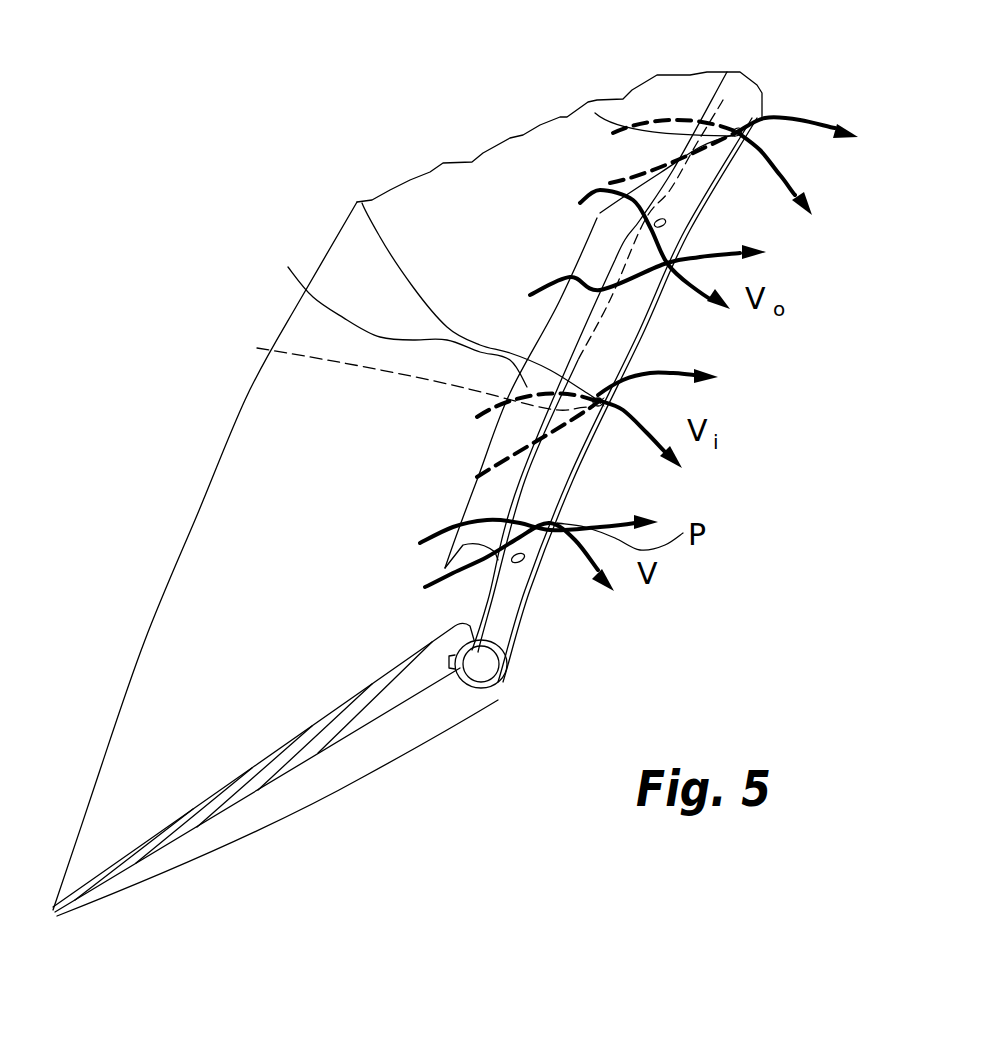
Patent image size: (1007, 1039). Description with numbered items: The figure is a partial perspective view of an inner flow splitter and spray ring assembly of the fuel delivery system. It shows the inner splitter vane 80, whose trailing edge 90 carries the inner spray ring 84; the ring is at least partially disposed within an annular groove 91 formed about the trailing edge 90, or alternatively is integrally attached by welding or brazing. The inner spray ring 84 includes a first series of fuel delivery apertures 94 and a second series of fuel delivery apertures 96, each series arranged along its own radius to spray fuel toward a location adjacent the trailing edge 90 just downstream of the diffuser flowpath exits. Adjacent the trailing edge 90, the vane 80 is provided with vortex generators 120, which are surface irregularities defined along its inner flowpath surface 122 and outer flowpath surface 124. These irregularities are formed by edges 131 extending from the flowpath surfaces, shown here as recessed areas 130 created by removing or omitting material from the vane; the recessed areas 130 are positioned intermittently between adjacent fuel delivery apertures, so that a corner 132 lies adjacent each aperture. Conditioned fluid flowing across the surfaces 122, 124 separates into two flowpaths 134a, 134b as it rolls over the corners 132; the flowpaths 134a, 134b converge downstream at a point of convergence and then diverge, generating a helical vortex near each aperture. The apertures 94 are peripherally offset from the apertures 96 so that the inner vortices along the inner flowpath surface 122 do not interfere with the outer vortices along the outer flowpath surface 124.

The inner splitter vane 80 is at (210, 876).
The inner spray ring 84 is at (518, 639).
The trailing edge 90 is at (632, 150).
The annular groove 91 is at (493, 683).
The first series of fuel delivery apertures 94 is at (362, 203).
The second series of fuel delivery apertures 96 is at (667, 223).
The vortex generators 120 is at (470, 428).
The inner flowpath surface 122 is at (340, 790).
The outer flowpath surface 124 is at (237, 627).
The recessed areas 130 is at (587, 88).
The edges 131 is at (590, 215).
The corner 132 is at (713, 108).
The first flowpath 134a is at (460, 550).
The second flowpath 134b is at (433, 573).